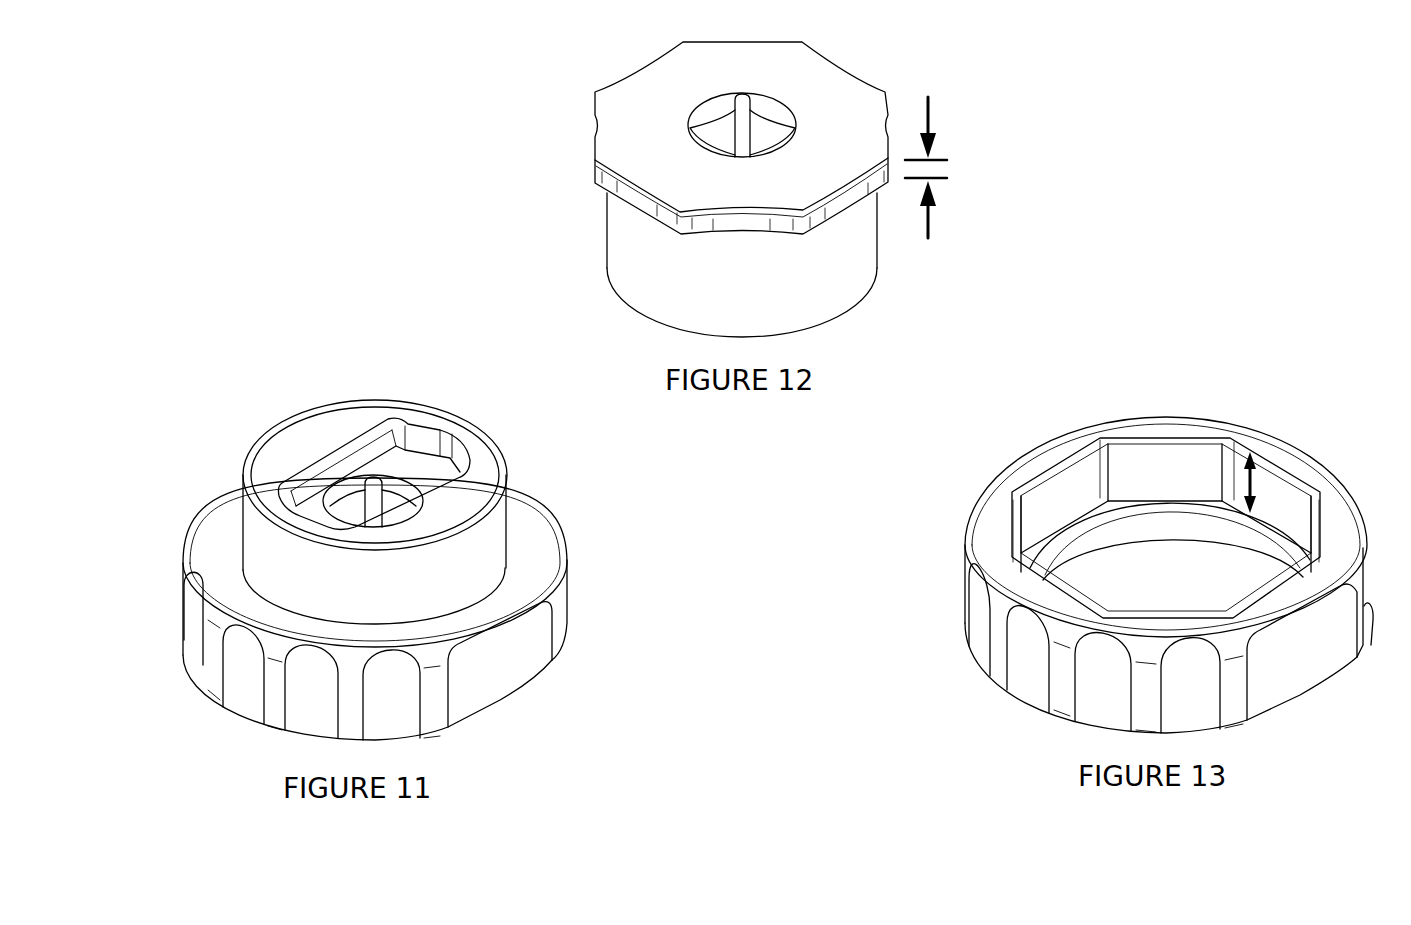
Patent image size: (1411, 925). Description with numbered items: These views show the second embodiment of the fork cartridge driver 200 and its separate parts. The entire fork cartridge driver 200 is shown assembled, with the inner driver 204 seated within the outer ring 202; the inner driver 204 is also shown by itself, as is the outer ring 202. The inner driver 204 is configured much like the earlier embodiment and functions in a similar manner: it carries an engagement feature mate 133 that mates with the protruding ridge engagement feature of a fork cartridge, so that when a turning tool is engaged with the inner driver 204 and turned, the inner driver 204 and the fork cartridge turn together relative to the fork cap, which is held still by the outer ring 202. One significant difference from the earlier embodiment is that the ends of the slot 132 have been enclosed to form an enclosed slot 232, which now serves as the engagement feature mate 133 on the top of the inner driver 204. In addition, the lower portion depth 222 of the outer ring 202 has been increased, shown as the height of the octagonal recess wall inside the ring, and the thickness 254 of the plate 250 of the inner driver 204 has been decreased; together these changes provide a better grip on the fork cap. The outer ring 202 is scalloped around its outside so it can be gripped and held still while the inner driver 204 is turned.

In FIG. 11, the fork cartridge driver 200 is at (344, 524).
In FIG. 11, the outer ring 202 is at (250, 680).
In FIG. 13, the outer ring 202 is at (1153, 585).
In FIG. 11, the inner driver 204 is at (397, 577).
In FIG. 12, the inner driver 204 is at (739, 181).
In FIG. 11, the slot 132 is at (396, 432).
In FIG. 11, the engagement feature mate 133 is at (396, 432).
In FIG. 11, the enclosed slot 232 is at (430, 440).
In FIG. 12, the plate 250 is at (848, 92).
In FIG. 12, the thickness 254 is at (930, 120).
In FIG. 13, the lower portion depth 222 is at (1260, 487).